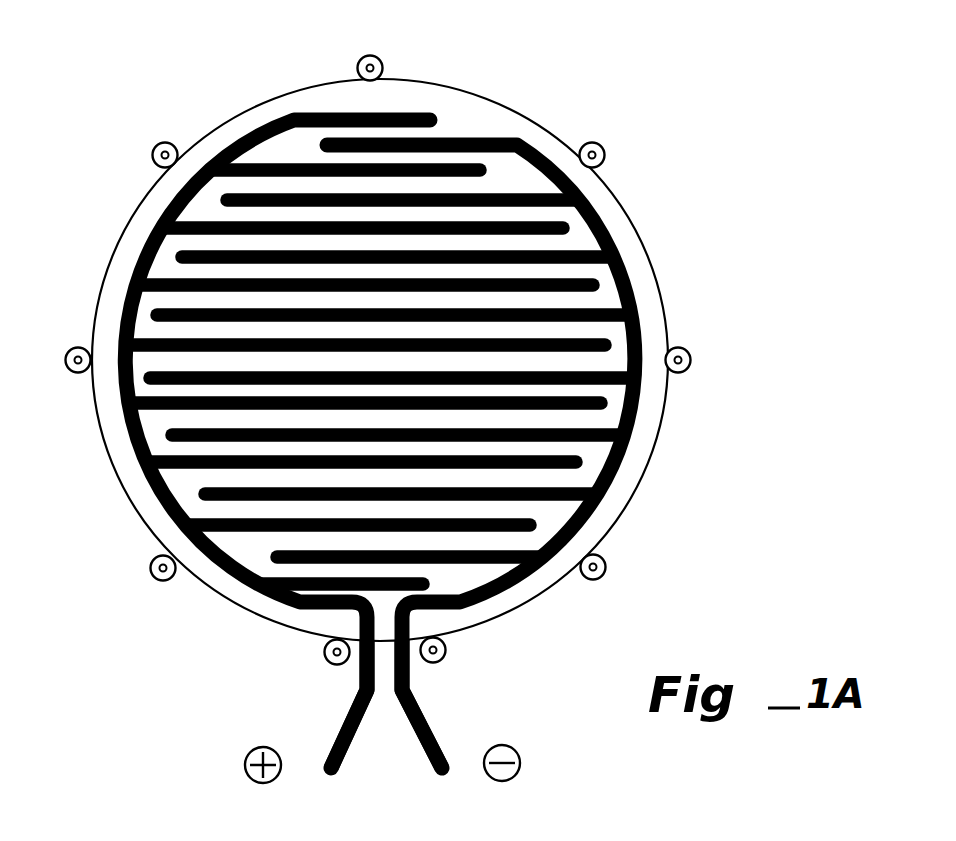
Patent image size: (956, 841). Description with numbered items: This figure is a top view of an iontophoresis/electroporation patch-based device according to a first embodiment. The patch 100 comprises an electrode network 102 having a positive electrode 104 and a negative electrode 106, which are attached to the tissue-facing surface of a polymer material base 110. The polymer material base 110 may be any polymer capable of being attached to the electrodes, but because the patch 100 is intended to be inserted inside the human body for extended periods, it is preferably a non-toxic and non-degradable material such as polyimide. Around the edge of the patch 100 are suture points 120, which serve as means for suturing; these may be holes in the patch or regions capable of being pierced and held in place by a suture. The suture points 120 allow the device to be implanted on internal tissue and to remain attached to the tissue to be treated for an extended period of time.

The patch 100 is at (93, 172).
The electrode network 102 is at (125, 297).
The positive electrode 104 is at (338, 748).
The negative electrode 106 is at (411, 693).
The polymer material base 110 is at (543, 144).
The suture points 120 is at (601, 166).